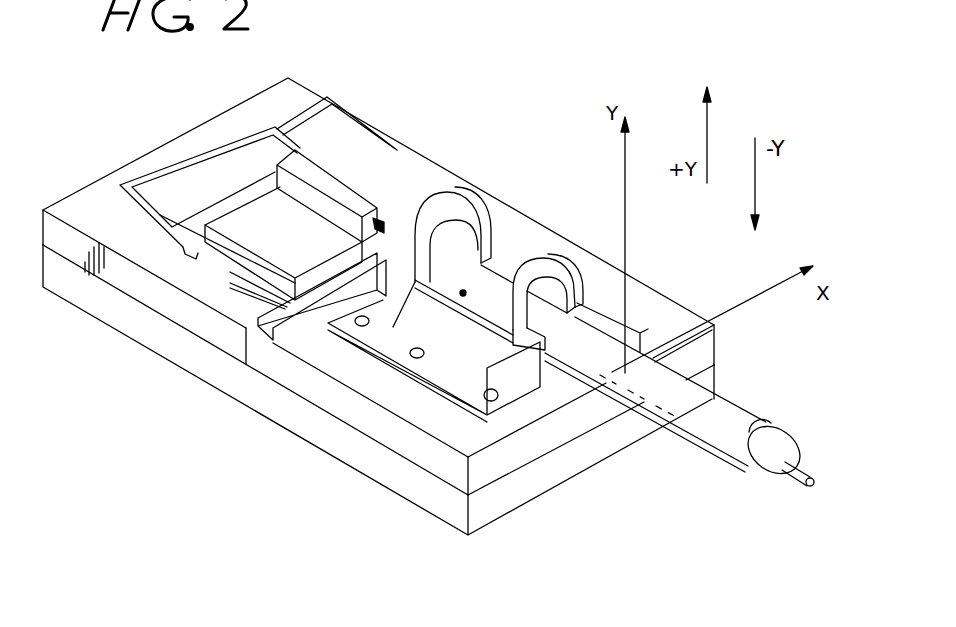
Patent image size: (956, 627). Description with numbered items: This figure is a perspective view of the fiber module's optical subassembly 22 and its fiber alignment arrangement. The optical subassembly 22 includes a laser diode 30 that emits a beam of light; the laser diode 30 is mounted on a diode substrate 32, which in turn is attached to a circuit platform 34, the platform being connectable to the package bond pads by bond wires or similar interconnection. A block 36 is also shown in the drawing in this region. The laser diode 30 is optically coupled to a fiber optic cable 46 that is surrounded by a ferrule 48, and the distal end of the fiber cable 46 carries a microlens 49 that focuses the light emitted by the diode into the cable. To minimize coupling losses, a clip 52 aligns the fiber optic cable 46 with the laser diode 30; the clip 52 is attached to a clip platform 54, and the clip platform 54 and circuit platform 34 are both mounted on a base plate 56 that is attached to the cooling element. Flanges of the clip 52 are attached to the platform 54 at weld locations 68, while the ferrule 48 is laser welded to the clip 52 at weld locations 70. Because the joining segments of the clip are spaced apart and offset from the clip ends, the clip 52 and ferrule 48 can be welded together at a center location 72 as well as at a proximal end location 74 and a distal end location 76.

The optical subassembly 22 is at (262, 442).
The laser diode 30 is at (305, 168).
The diode substrate 32 is at (250, 268).
The circuit platform 34 is at (80, 207).
The block 36 is at (367, 215).
The fiber optic cable 46 is at (755, 480).
The ferrule 48 is at (690, 428).
The microlens 49 is at (382, 222).
The clip 52 is at (545, 254).
The clip platform 54 is at (500, 430).
The base plate 56 is at (441, 503).
The weld locations 68 is at (413, 354).
The weld locations 70 is at (463, 293).
The center location 72 is at (503, 260).
The proximal end location 74 is at (415, 356).
The distal end location 76 is at (375, 274).